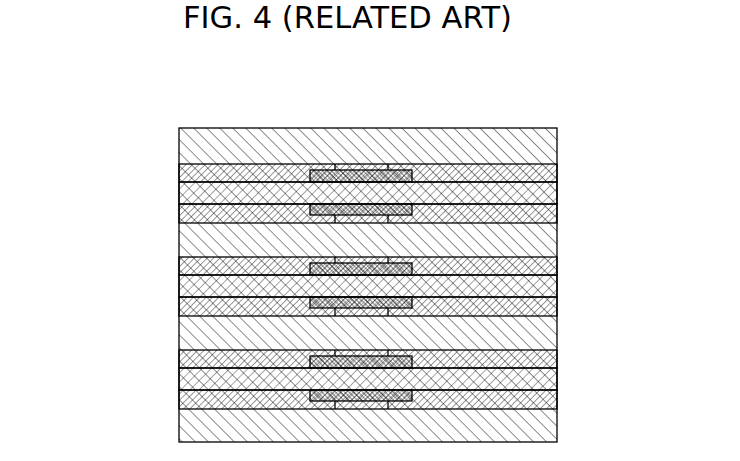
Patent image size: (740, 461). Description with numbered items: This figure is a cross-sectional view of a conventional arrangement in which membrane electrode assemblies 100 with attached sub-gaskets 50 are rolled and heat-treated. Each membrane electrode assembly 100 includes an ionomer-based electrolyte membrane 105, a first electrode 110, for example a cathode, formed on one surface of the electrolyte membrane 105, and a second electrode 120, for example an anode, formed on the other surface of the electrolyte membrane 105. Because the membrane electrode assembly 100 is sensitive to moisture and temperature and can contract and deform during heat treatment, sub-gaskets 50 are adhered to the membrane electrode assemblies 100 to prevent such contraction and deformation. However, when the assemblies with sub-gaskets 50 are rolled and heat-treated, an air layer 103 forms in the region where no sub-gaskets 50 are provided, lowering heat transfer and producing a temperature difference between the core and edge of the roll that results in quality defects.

The sub-gasket 50 is at (550, 172).
The membrane electrode assembly 100 is at (298, 144).
The air layer 103 is at (357, 168).
The electrolyte membrane 105 is at (210, 193).
The first electrode 110 is at (328, 121).
The second electrode 120 is at (330, 210).